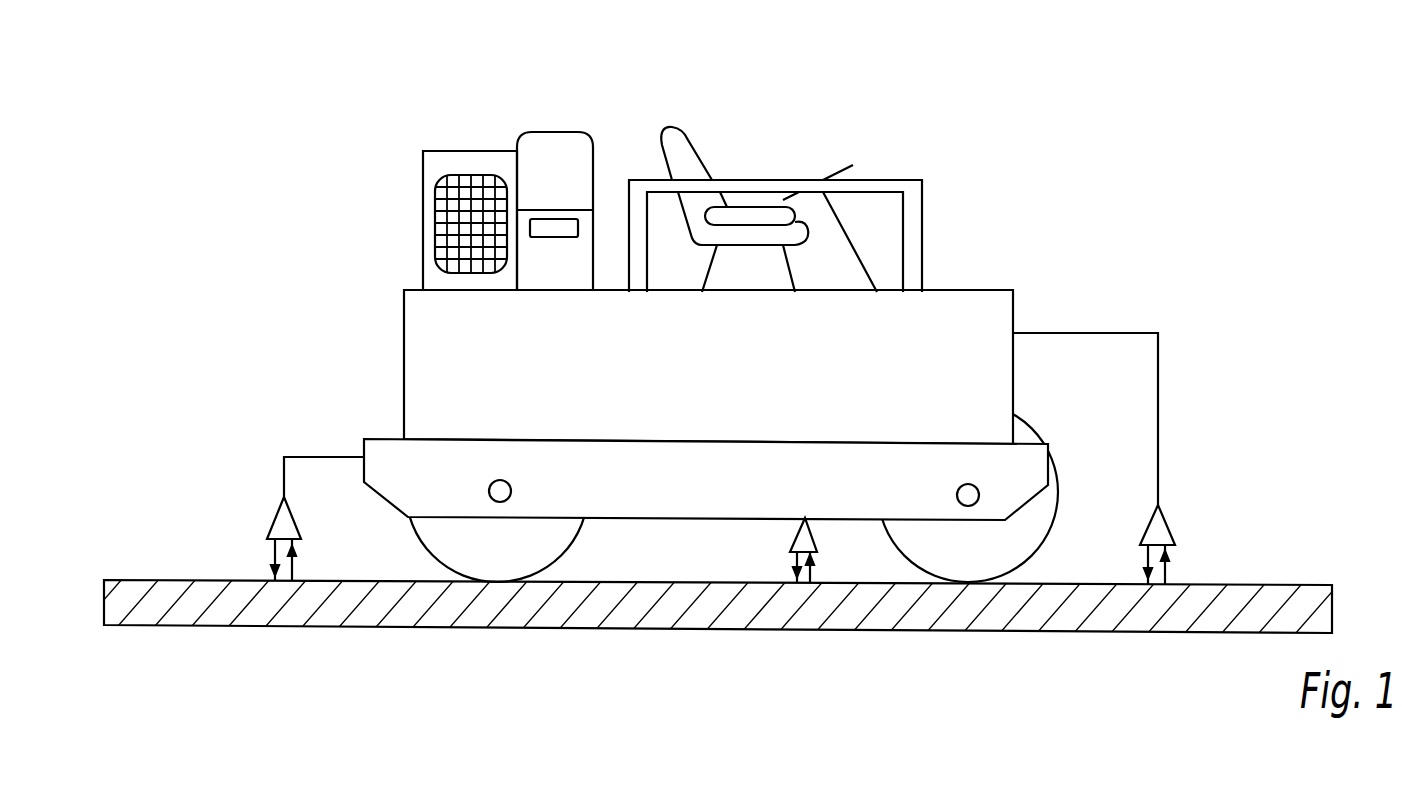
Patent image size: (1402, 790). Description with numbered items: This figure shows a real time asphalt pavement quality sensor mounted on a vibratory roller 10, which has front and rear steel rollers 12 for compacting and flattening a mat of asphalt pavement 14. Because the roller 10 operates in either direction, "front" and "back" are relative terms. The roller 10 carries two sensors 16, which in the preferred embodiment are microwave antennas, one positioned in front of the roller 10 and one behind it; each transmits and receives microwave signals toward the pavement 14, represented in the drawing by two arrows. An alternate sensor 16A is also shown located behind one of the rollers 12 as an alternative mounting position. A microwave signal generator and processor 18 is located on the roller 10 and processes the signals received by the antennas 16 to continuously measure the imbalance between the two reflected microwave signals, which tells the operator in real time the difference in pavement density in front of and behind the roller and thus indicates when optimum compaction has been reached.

The vibratory roller 10 is at (385, 338).
The steel rollers 12 is at (553, 550).
The asphalt pavement 14 is at (989, 640).
The sensors 16 is at (282, 512).
The alternate sensor 16A is at (800, 533).
The microwave signal generator and processor 18 is at (556, 138).